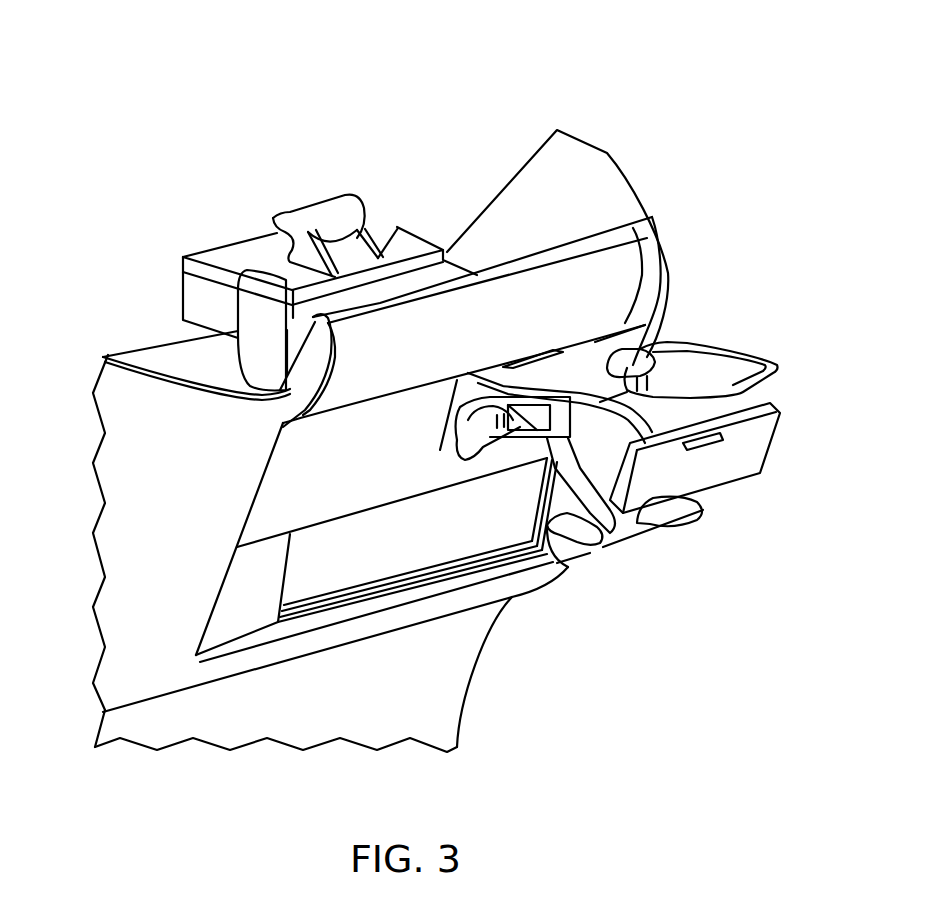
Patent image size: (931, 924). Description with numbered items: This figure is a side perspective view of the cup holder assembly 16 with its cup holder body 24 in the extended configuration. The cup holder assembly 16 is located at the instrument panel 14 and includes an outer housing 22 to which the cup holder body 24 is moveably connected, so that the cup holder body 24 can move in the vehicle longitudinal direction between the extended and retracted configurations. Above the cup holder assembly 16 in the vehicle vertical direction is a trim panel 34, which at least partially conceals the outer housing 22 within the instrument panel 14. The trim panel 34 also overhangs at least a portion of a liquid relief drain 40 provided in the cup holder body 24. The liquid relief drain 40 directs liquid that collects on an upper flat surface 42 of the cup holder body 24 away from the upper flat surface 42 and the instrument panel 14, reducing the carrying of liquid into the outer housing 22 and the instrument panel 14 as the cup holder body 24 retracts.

The instrument panel 14 is at (574, 117).
The cup holder assembly 16 is at (722, 313).
The outer housing 22 is at (423, 218).
The cup holder body 24 is at (432, 445).
The trim panel 34 is at (583, 285).
The liquid relief drain 40 is at (512, 358).
The upper flat surface 42 is at (589, 355).